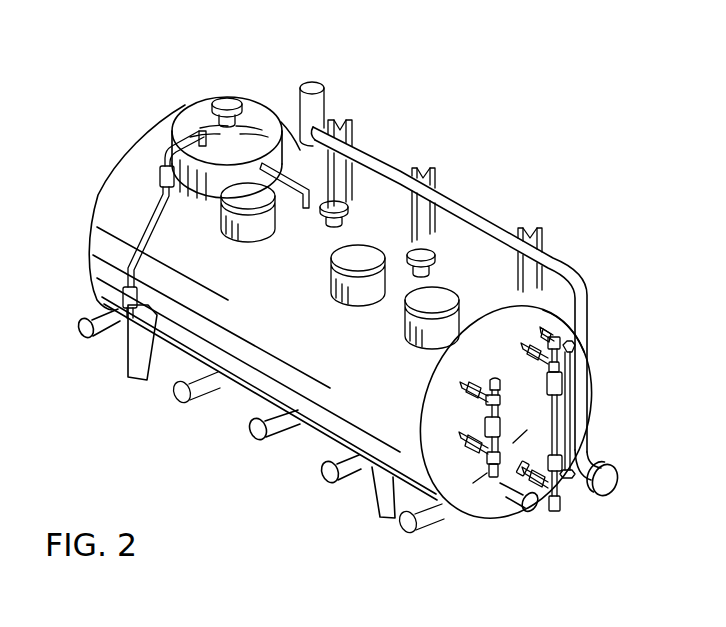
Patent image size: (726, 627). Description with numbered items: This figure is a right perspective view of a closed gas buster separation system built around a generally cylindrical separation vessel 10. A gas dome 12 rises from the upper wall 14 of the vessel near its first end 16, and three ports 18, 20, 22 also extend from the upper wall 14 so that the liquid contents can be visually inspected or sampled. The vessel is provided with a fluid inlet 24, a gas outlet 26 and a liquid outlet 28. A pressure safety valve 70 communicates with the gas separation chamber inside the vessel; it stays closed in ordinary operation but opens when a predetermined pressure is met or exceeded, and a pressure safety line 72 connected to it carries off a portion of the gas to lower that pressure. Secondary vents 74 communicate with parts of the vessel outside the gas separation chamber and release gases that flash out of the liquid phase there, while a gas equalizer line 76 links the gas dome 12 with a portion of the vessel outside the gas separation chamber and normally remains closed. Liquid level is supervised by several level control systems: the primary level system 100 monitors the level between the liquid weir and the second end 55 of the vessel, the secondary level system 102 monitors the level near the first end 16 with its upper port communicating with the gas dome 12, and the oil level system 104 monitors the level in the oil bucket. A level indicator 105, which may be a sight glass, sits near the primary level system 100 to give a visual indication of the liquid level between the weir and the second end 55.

The separation vessel 10 is at (92, 92).
The gas dome 12 is at (196, 113).
The upper wall 14 is at (350, 237).
The first end 16 is at (107, 183).
The port 18 is at (222, 214).
The port 20 is at (333, 263).
The port 22 is at (407, 312).
The fluid inlet 24 is at (173, 395).
The gas outlet 26 is at (227, 102).
The liquid outlet 28 is at (403, 525).
The second end 55 is at (553, 318).
The pressure safety valve 70 is at (326, 102).
The pressure safety line 72 is at (452, 207).
The secondary vent 74 is at (343, 200).
The gas equalizer line 76 is at (291, 176).
The primary level system 100 is at (559, 530).
The secondary level system 102 is at (140, 256).
The oil level system 104 is at (478, 495).
The level indicator 105 is at (569, 391).